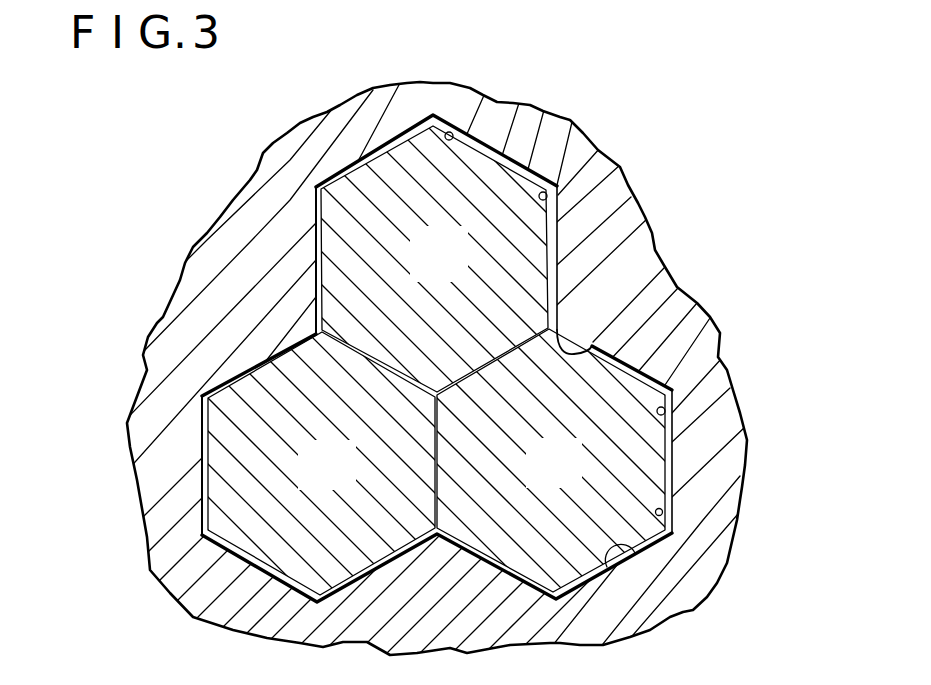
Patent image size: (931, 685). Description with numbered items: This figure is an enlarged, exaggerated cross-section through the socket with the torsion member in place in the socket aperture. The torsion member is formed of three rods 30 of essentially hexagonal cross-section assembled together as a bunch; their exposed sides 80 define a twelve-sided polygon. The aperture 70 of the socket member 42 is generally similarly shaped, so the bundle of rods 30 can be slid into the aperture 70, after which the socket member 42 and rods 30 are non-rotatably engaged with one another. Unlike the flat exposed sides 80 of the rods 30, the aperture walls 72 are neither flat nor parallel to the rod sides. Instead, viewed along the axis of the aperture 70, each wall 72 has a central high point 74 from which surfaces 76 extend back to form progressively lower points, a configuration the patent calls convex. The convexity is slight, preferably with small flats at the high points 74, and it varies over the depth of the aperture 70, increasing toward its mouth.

The rods 30 is at (421, 263).
The socket member 42 is at (702, 363).
The aperture 70 is at (590, 349).
The aperture walls 72 is at (642, 548).
The central high point 74 is at (663, 466).
The surfaces 76 is at (667, 399).
The exposed sides 80 is at (450, 132).